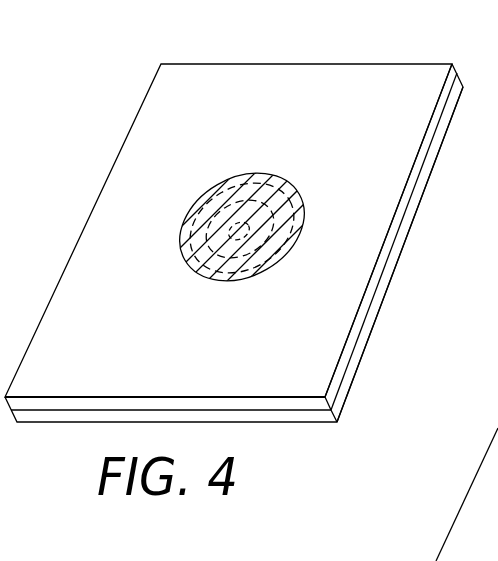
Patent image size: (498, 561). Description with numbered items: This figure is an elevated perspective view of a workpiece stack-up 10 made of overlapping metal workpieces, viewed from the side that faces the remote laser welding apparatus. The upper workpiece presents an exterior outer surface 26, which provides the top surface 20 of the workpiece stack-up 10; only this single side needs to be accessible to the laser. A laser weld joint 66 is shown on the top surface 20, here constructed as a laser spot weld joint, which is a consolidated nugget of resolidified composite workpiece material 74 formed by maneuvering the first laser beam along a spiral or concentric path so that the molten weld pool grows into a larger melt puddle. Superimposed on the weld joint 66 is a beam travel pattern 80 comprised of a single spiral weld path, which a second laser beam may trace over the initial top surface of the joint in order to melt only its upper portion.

The workpiece stack-up 10 is at (113, 115).
The top surface 20 is at (413, 107).
The exterior outer surface 26 is at (394, 243).
The laser weld joint 66 is at (257, 177).
The resolidified composite workpiece material 74 is at (296, 205).
The beam travel pattern 80 is at (213, 248).